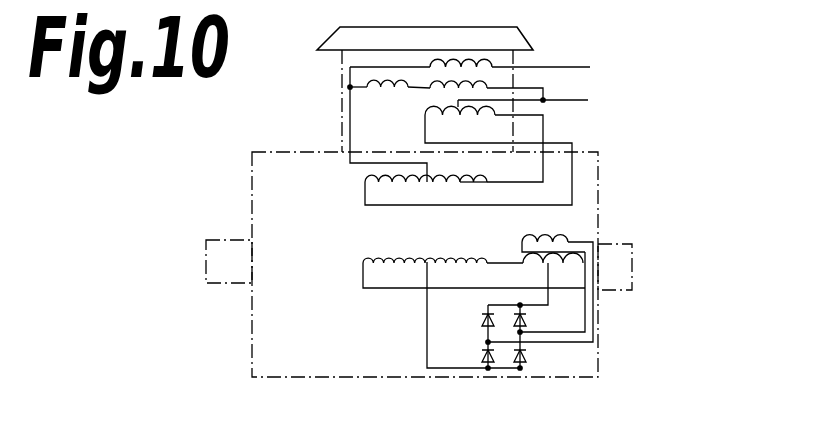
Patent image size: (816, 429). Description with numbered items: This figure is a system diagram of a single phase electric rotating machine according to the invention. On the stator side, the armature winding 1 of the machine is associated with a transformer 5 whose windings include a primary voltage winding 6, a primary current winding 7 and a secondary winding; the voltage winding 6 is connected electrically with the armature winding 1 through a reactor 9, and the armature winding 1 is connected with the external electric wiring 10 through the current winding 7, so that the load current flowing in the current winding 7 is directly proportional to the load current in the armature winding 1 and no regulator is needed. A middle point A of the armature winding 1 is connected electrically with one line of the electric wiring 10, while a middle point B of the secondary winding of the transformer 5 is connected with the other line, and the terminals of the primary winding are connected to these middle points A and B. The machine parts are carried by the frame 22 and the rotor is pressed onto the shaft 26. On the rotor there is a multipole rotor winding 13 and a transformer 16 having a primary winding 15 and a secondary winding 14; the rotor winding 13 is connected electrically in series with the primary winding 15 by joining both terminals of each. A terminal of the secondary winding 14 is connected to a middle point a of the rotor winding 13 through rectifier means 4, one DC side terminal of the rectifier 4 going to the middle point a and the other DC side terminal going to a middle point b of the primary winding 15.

The armature winding 1 is at (487, 184).
The rectifier 4 is at (486, 336).
The transformer 5 is at (533, 43).
The primary voltage winding 6 is at (490, 88).
The primary current winding 7 is at (455, 67).
The reactor 9 is at (367, 86).
The electric wiring 10 is at (590, 98).
The multipole rotor winding 13 is at (425, 262).
The secondary winding 14 is at (522, 242).
The primary winding 15 is at (552, 266).
The transformer 16 is at (543, 278).
The frame 22 is at (601, 182).
The shaft 26 is at (243, 240).
The middle point of the armature winding A is at (428, 176).
The middle point of the secondary winding B is at (455, 108).
The middle point of the multipole rotor winding a is at (470, 300).
The middle point of the primary winding b is at (518, 284).